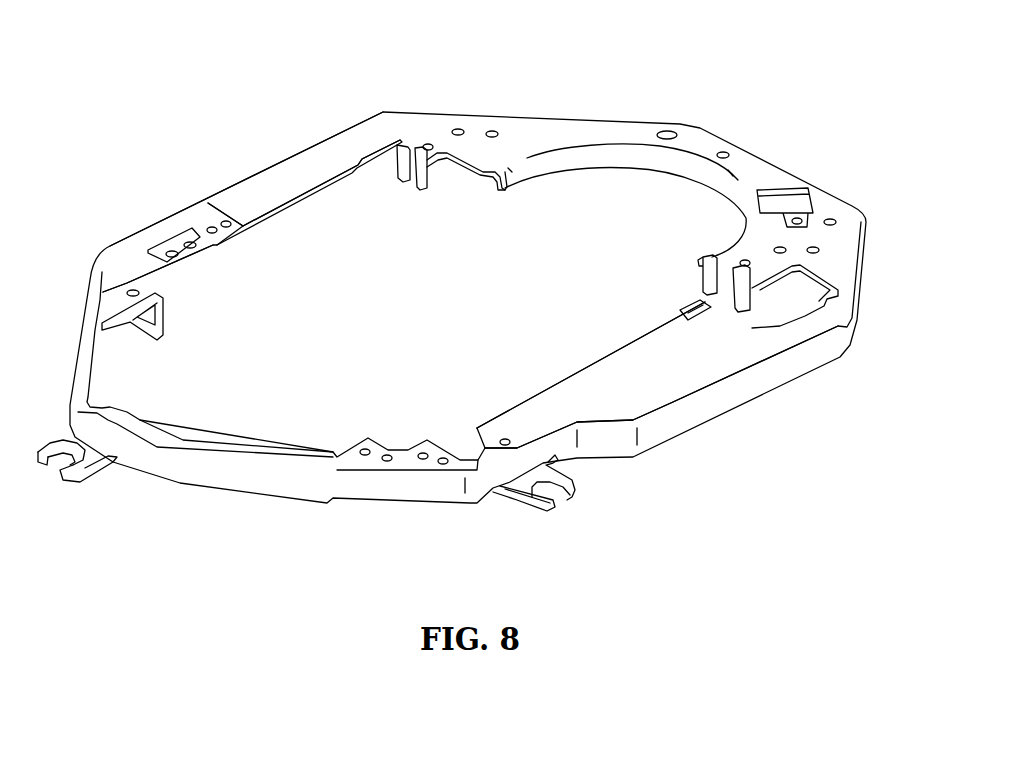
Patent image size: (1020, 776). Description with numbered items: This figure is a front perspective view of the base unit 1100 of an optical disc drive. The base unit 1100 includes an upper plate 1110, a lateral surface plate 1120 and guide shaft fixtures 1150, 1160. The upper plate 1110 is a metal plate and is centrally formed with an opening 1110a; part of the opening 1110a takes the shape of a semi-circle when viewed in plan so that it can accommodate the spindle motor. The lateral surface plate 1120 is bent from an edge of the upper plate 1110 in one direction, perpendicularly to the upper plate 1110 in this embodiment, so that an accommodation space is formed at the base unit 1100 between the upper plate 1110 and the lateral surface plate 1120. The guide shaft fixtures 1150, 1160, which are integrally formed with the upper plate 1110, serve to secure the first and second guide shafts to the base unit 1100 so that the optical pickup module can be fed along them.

The base unit 1100 is at (737, 133).
The upper plate 1110 is at (257, 195).
The opening 1110a is at (435, 323).
The lateral surface plate 1120 is at (723, 392).
The guide shaft fixture 1150 is at (760, 297).
The guide shaft fixture 1160 is at (431, 182).